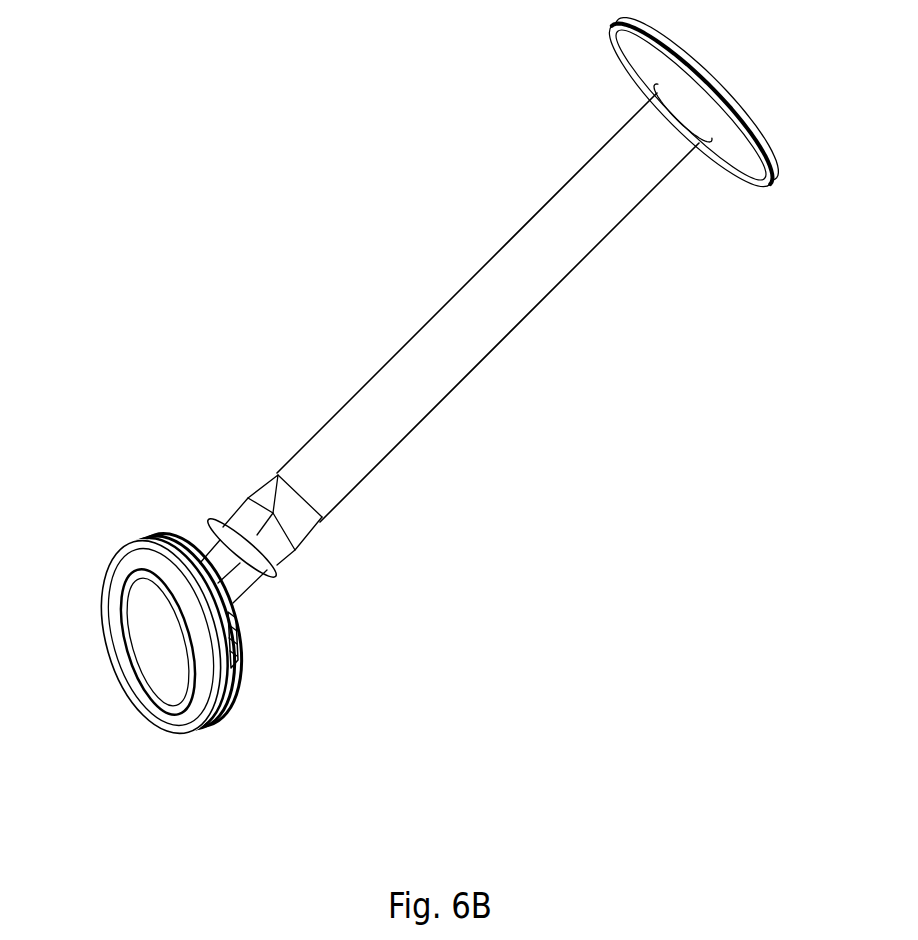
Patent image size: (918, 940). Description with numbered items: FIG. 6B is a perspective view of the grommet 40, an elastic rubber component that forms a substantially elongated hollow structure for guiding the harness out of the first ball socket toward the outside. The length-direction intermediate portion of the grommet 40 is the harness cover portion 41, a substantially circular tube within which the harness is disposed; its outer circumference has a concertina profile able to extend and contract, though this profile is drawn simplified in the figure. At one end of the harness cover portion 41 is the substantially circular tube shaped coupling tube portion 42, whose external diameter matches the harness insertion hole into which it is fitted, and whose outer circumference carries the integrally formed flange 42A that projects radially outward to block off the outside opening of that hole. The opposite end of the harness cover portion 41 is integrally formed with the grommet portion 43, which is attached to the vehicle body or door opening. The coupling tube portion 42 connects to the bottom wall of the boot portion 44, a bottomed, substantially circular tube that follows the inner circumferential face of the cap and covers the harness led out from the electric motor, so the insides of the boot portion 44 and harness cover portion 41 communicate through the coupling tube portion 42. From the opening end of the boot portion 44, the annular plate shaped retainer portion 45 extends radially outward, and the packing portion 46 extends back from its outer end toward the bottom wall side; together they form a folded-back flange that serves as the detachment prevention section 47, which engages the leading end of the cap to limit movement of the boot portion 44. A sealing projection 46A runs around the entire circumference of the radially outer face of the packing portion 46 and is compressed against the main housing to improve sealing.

The grommet 40 is at (347, 272).
The harness cover portion 41 is at (501, 305).
The coupling tube portion 42 is at (293, 546).
The flange 42A is at (310, 573).
The grommet portion 43 is at (636, 84).
The boot portion 44 is at (156, 658).
The retainer portion 45 is at (118, 572).
The packing portion 46 is at (127, 547).
The sealing projection 46A is at (207, 703).
The detachment prevention section 47 is at (145, 438).